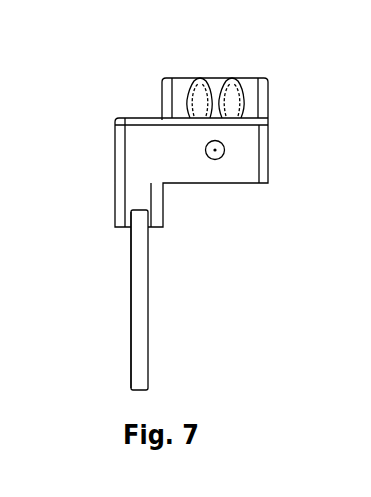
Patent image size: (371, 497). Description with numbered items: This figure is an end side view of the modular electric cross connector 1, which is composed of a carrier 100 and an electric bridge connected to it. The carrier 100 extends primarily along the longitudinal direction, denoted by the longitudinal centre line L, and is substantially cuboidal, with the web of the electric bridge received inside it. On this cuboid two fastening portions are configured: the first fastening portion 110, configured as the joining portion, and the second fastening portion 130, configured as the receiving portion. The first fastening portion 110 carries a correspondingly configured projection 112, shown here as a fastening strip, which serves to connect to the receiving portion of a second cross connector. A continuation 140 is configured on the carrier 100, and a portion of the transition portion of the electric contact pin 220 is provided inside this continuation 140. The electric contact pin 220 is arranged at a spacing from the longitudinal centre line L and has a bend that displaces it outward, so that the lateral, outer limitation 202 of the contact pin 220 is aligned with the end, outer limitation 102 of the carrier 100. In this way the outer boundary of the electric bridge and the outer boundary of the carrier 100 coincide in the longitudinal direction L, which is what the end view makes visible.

The modular electric cross connector 1 is at (103, 57).
The carrier 100 is at (113, 113).
The continuation 140 is at (110, 128).
The second fastening portion 130 is at (180, 90).
The projection 112 is at (200, 78).
The first fastening portion 110 is at (256, 118).
The lateral outer limitation of the carrier 102 is at (238, 130).
The longitudinal centre line L is at (215, 153).
The electric contact pin 220 is at (130, 276).
The lateral outer limitation of the contact pin 202 is at (135, 333).